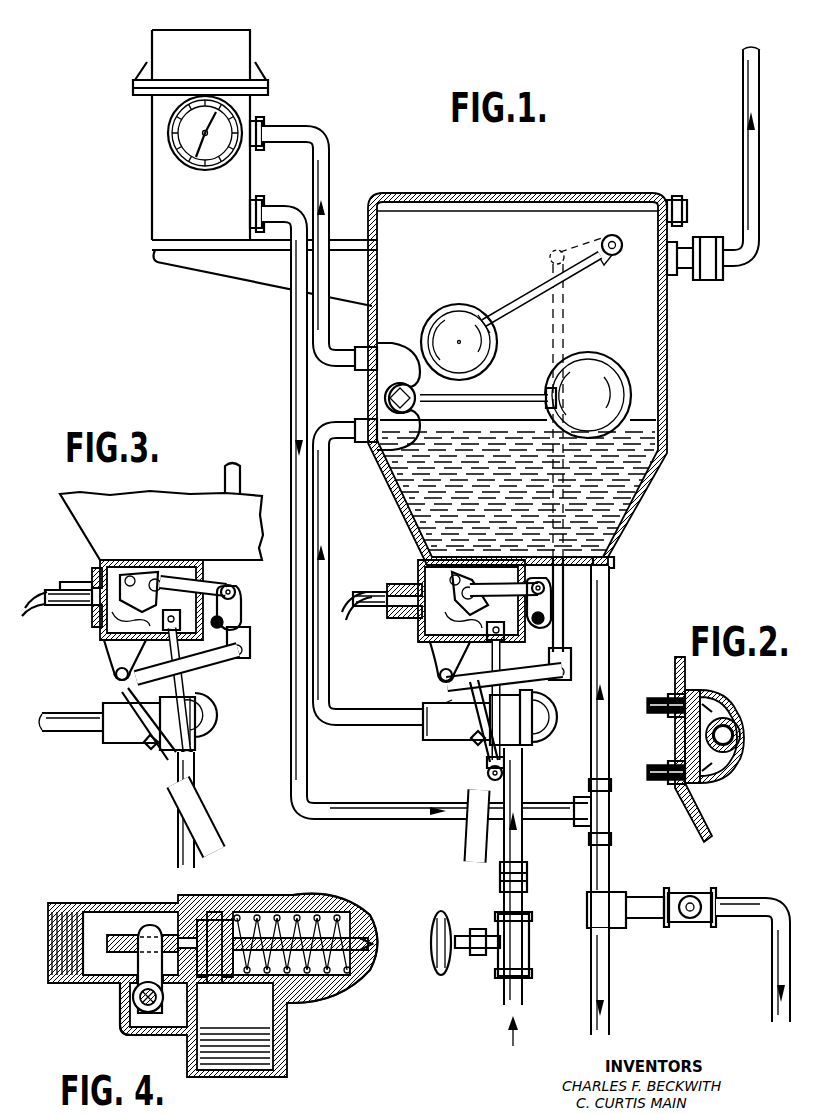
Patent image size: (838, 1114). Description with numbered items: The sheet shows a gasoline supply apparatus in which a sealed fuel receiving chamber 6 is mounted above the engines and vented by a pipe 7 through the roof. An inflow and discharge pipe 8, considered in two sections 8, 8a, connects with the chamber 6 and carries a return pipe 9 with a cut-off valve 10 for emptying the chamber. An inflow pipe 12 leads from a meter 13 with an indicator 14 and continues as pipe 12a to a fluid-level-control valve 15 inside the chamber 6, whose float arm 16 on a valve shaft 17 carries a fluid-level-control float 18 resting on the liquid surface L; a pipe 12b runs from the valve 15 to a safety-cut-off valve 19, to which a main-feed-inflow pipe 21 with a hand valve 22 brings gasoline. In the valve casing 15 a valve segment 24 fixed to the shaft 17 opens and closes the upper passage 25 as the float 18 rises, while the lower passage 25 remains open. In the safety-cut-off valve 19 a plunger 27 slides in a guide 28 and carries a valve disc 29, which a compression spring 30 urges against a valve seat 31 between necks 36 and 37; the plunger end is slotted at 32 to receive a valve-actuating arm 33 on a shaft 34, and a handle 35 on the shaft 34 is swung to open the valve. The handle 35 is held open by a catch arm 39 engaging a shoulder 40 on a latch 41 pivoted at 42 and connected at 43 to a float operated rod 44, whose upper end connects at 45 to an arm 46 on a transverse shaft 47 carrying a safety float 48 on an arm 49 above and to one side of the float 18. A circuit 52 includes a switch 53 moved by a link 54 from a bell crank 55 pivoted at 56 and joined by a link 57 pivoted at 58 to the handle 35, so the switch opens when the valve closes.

In FIG. 1, the fuel receiving chamber 6 is at (466, 212).
In FIG. 3, the fuel receiving chamber 6 is at (150, 512).
In FIG. 2, the fuel receiving chamber 6 is at (687, 666).
In FIG. 1, the vent pipe 7 is at (760, 173).
In FIG. 1, the inflow and discharge pipe 8 is at (610, 606).
In FIG. 1, the inflow and discharge pipe section 8a is at (610, 1003).
In FIG. 1, the return pipe 9 is at (745, 920).
In FIG. 1, the cut-off valve 10 is at (692, 896).
In FIG. 1, the inflow pipe 12 is at (292, 319).
In FIG. 1, the pipe 12a is at (329, 179).
In FIG. 2, the pipe 12a is at (647, 706).
In FIG. 1, the pipe 12b is at (333, 553).
In FIG. 3, the pipe 12b is at (62, 735).
In FIG. 2, the pipe 12b is at (647, 772).
In FIG. 1, the meter 13 is at (172, 193).
In FIG. 1, the indicator 14 is at (182, 140).
In FIG. 1, the fluid-level-control valve 15 is at (388, 352).
In FIG. 2, the fluid-level-control valve 15 is at (718, 700).
In FIG. 1, the float arm 16 is at (511, 397).
In FIG. 1, the valve shaft 17 is at (385, 399).
In FIG. 2, the valve shaft 17 is at (741, 731).
In FIG. 1, the fluid-level-control float 18 is at (600, 368).
In FIG. 1, the safety-cut-off valve 19 is at (548, 732).
In FIG. 3, the safety-cut-off valve 19 is at (200, 714).
In FIG. 4, the safety-cut-off valve 19 is at (262, 900).
In FIG. 1, the main-feed-inflow pipe 21 is at (522, 806).
In FIG. 3, the main-feed-inflow pipe 21 is at (178, 838).
In FIG. 1, the hand valve 22 is at (508, 958).
In FIG. 2, the valve segment 24 is at (742, 744).
In FIG. 2, the passage 25 is at (722, 714).
In FIG. 4, the plunger 27 is at (350, 918).
In FIG. 4, the guide 28 is at (342, 992).
In FIG. 4, the valve disc 29 is at (230, 908).
In FIG. 4, the compression spring 30 is at (262, 980).
In FIG. 4, the valve seat 31 is at (204, 912).
In FIG. 4, the slot 32 is at (135, 925).
In FIG. 4, the valve-actuating arm 33 is at (118, 995).
In FIG. 1, the shaft 34 is at (476, 745).
In FIG. 3, the shaft 34 is at (145, 748).
In FIG. 4, the shaft 34 is at (142, 1015).
In FIG. 1, the handle 35 is at (476, 830).
In FIG. 3, the handle 35 is at (200, 806).
In FIG. 4, the valve neck 36 is at (90, 920).
In FIG. 4, the valve neck 37 is at (235, 1010).
In FIG. 1, the trigger or catch arm 39 is at (445, 697).
In FIG. 3, the trigger or catch arm 39 is at (115, 697).
In FIG. 1, the shoulder 40 is at (440, 655).
In FIG. 3, the shoulder 40 is at (110, 658).
In FIG. 1, the latch 41 is at (540, 680).
In FIG. 3, the latch 41 is at (225, 658).
In FIG. 1, the pivot 42 is at (440, 677).
In FIG. 3, the pivot 42 is at (114, 676).
In FIG. 1, the pivotal connection 43 is at (575, 672).
In FIG. 3, the pivotal connection 43 is at (248, 648).
In FIG. 1, the float operated rod 44 is at (566, 306).
In FIG. 3, the float operated rod 44 is at (240, 477).
In FIG. 1, the connection 45 is at (557, 249).
In FIG. 1, the arm 46 is at (598, 237).
In FIG. 1, the transverse shaft 47 is at (615, 235).
In FIG. 1, the safety float 48 is at (458, 320).
In FIG. 1, the arm 49 is at (522, 300).
In FIG. 1, the circuit 52 is at (360, 595).
In FIG. 3, the circuit 52 is at (36, 594).
In FIG. 1, the switch 53 is at (470, 585).
In FIG. 3, the switch 53 is at (135, 578).
In FIG. 1, the link 54 is at (515, 580).
In FIG. 3, the link 54 is at (188, 560).
In FIG. 1, the bell crank 55 is at (548, 586).
In FIG. 3, the bell crank 55 is at (237, 594).
In FIG. 1, the pivot 56 is at (546, 618).
In FIG. 3, the pivot 56 is at (224, 621).
In FIG. 1, the link 57 is at (503, 658).
In FIG. 3, the link 57 is at (183, 686).
In FIG. 1, the pivotal connection 58 is at (495, 773).
In FIG. 3, the pivotal connection 58 is at (196, 752).
In FIG. 1, the liquid surface L is at (660, 413).